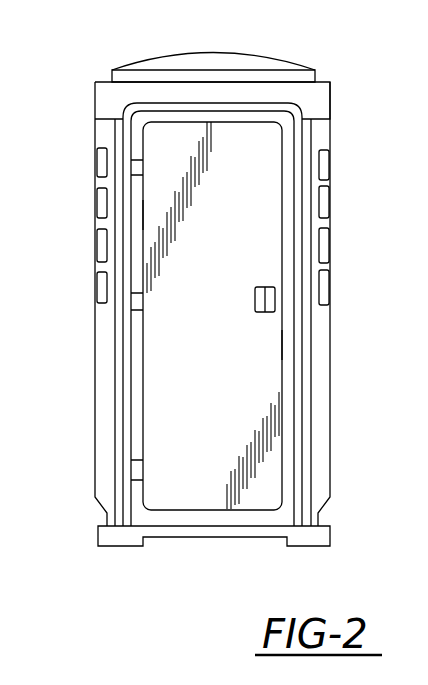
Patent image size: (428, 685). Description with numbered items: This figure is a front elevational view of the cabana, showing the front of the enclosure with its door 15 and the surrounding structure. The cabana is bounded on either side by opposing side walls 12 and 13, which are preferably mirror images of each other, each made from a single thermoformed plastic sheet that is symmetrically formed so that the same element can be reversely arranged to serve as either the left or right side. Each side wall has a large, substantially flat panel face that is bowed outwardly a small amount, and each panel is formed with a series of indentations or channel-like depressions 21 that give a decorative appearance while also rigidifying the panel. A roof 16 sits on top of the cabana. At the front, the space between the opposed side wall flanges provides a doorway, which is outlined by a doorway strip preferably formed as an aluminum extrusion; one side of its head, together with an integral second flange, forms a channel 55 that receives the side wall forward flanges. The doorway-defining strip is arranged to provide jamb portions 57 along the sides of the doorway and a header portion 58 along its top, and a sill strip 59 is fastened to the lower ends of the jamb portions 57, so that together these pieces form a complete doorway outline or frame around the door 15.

The side wall 12 is at (330, 452).
The side wall 13 is at (95, 442).
The door 15 is at (217, 412).
The roof 16 is at (148, 70).
The channel-like depressions 21 is at (97, 286).
The channel 55 is at (277, 93).
The jamb portions 57 is at (143, 213).
The header portion 58 is at (193, 118).
The sill strip 59 is at (218, 516).